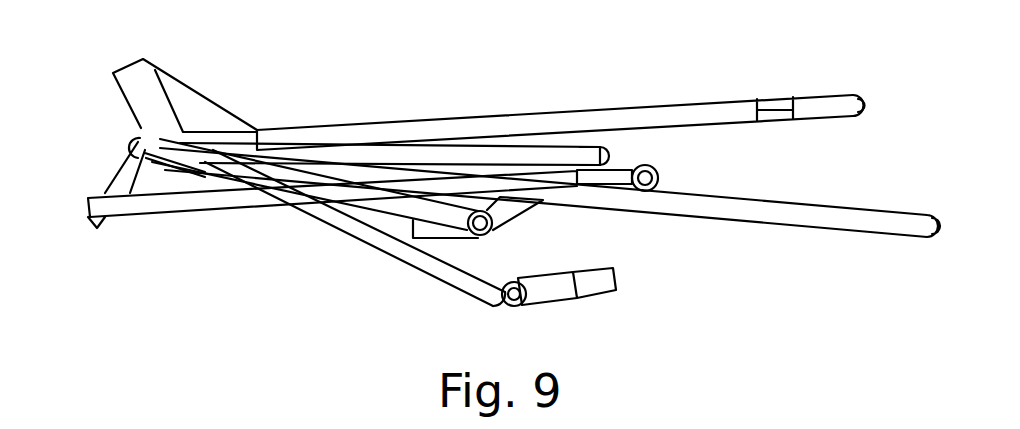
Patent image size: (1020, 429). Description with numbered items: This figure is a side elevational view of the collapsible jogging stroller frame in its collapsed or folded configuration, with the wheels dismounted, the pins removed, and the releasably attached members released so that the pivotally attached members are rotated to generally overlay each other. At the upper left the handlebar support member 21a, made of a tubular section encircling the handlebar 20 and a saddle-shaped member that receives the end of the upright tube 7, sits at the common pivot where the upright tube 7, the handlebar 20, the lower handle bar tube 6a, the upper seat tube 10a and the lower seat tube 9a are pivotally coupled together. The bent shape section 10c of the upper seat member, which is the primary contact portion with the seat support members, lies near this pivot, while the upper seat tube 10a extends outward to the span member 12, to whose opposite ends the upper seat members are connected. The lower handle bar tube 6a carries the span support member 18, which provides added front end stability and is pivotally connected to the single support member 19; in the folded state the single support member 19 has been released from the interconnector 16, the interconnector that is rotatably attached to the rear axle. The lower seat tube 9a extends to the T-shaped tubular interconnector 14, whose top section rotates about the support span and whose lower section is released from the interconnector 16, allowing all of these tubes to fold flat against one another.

The lower handle bar tube 6a is at (715, 202).
The upright tube 7 is at (347, 197).
The lower seat tube 9a is at (405, 253).
The upper seat tube 10a is at (385, 150).
The bent shape section 10c is at (125, 180).
The span member 12 is at (613, 153).
The interconnector 14 is at (560, 292).
The interconnector 16 is at (507, 213).
The span support member 18 is at (660, 178).
The single support member 19 is at (208, 203).
The handlebar 20 is at (565, 120).
The handlebar support member 21a is at (203, 118).